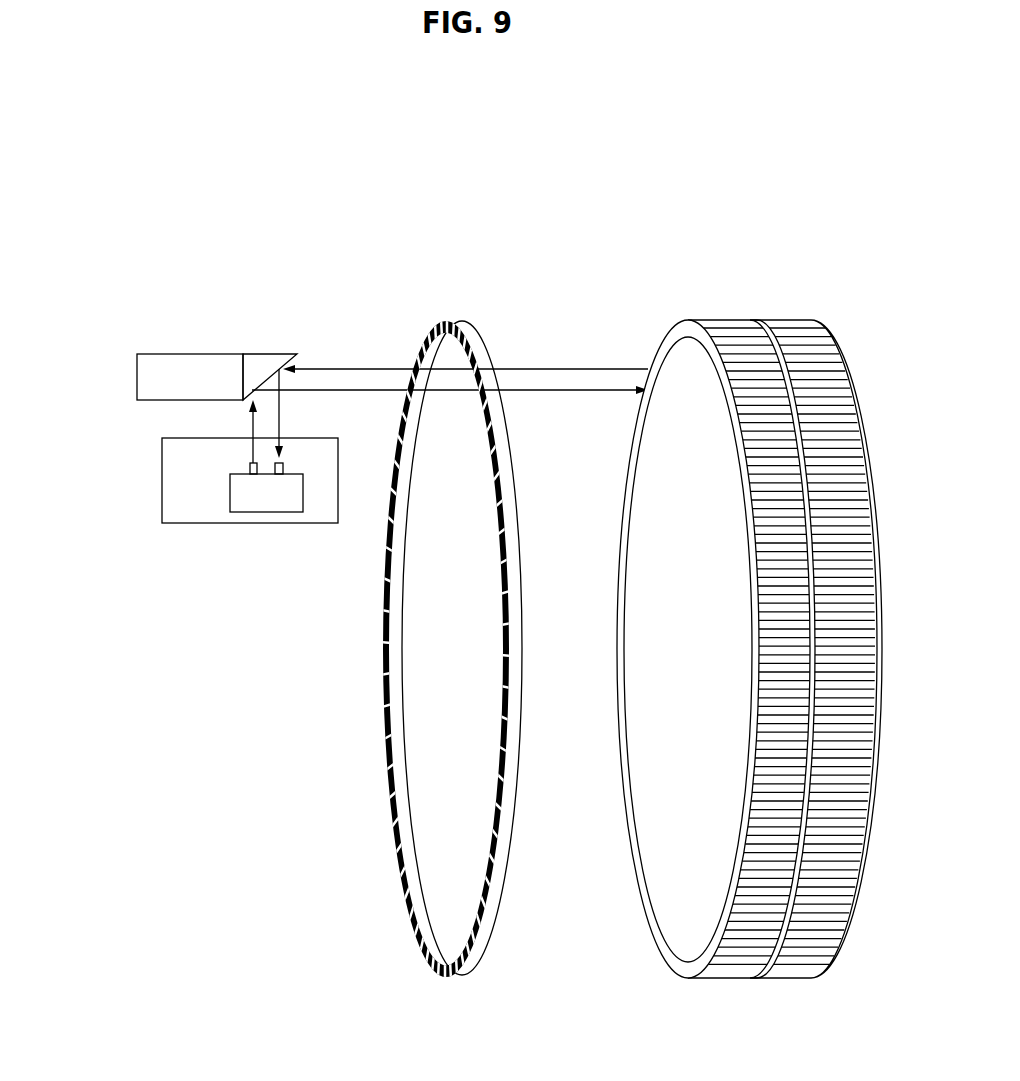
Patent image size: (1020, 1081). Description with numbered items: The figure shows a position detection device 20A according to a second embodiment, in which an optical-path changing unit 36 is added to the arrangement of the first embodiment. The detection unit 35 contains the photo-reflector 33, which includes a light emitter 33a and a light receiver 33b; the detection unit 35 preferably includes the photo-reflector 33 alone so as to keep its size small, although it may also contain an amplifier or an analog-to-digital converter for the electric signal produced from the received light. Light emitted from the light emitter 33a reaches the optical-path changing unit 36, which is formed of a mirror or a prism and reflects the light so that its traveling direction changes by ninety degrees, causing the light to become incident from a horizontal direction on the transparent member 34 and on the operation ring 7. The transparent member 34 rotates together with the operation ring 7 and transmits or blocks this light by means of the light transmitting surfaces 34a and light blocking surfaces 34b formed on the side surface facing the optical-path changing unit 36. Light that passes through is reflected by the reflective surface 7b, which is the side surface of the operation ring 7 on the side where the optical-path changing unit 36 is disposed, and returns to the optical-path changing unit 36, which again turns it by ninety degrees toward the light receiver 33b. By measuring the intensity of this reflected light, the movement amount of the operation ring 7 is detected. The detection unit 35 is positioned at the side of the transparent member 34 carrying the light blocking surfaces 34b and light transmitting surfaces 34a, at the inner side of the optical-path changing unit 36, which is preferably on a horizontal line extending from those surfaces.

The position detection device 20A is at (86, 205).
The operation ring 7 is at (783, 318).
The reflective surface 7b is at (683, 972).
The transparent member 34 is at (480, 340).
The light transmitting surfaces 34a is at (397, 847).
The light blocking surfaces 34b is at (405, 908).
The optical-path changing unit 36 is at (190, 378).
The detection unit 35 is at (195, 508).
The photo-reflector 33 is at (267, 494).
The light emitter 33a is at (250, 466).
The light receiver 33b is at (282, 470).